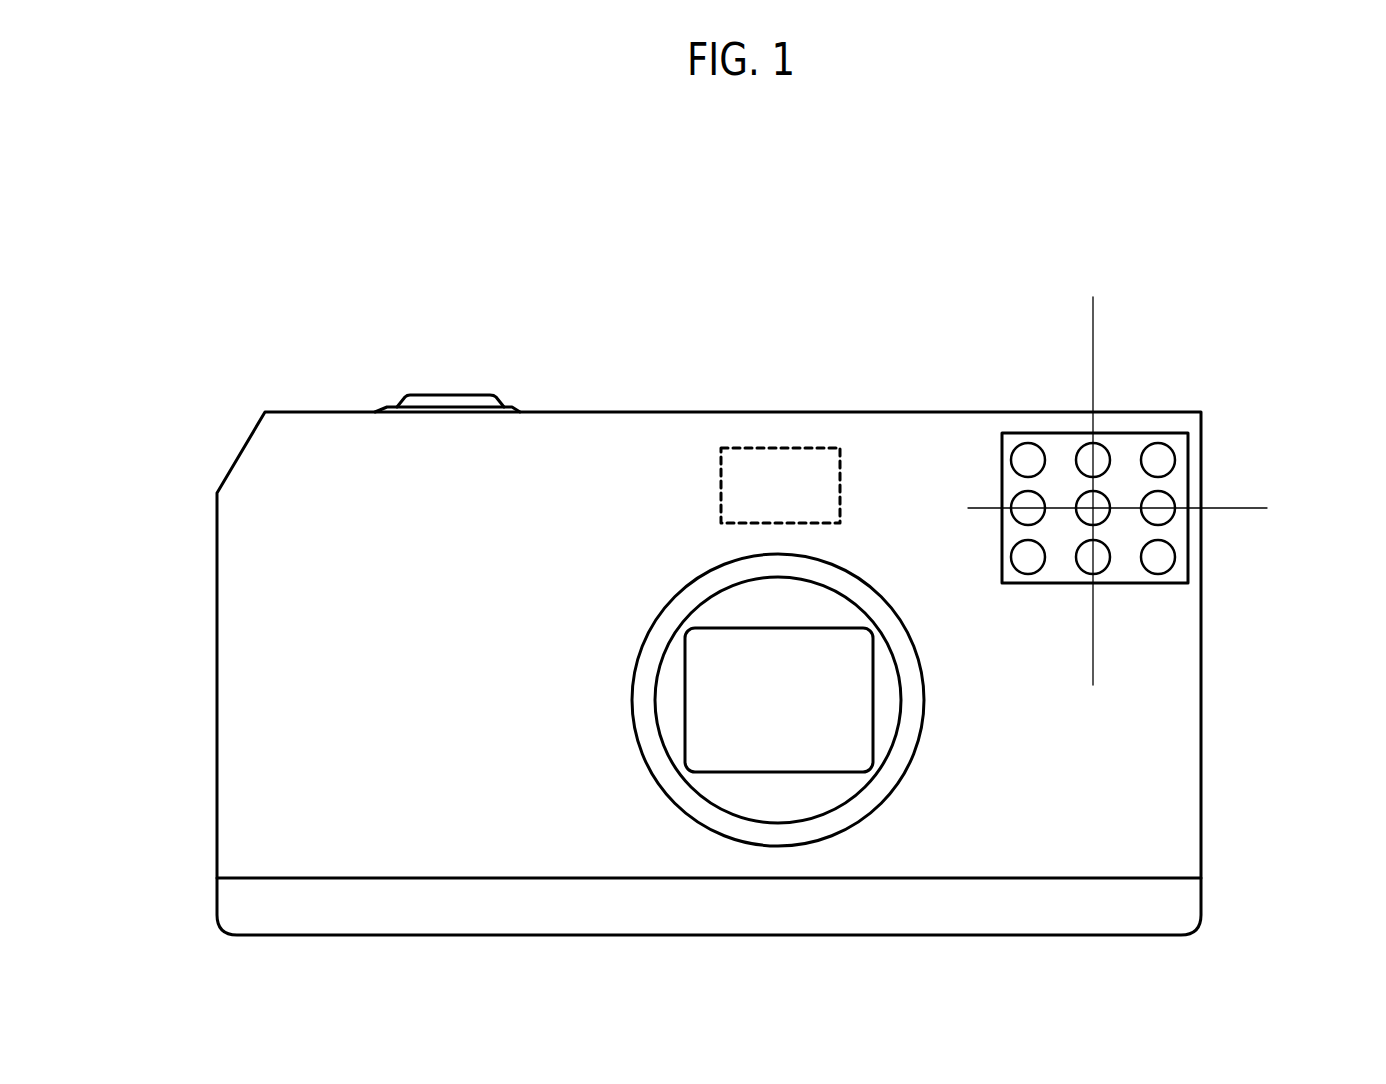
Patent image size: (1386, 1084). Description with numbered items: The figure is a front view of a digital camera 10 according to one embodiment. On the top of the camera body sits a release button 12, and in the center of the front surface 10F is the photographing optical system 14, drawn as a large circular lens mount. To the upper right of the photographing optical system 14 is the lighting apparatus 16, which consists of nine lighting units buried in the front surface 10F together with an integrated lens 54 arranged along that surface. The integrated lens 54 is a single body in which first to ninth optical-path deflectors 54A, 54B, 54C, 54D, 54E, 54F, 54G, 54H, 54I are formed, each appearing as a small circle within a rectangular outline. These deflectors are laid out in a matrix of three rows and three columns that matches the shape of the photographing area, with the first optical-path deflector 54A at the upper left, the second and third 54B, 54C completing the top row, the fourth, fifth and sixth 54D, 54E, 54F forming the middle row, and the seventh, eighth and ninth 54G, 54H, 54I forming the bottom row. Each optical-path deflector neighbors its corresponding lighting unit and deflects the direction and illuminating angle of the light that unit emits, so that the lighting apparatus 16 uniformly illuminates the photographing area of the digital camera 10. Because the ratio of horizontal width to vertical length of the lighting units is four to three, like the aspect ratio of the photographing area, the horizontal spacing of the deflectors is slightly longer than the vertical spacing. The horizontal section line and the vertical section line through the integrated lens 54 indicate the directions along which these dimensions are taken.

The digital camera 10 is at (834, 325).
The front surface 10F is at (1158, 798).
The release button 12 is at (452, 395).
The photographing optical system 14 is at (617, 695).
The lighting apparatus 16 is at (1197, 389).
The integrated lens 54 is at (1187, 565).
The first optical-path deflector 54A is at (1028, 443).
The second optical-path deflector 54B is at (1107, 447).
The third optical-path deflector 54C is at (1173, 452).
The fourth optical-path deflector 54D is at (1011, 500).
The fifth optical-path deflector 54E is at (1080, 522).
The sixth optical-path deflector 54F is at (1175, 500).
The seventh optical-path deflector 54G is at (1012, 558).
The eighth optical-path deflector 54H is at (1102, 567).
The ninth optical-path deflector 54I is at (1176, 552).